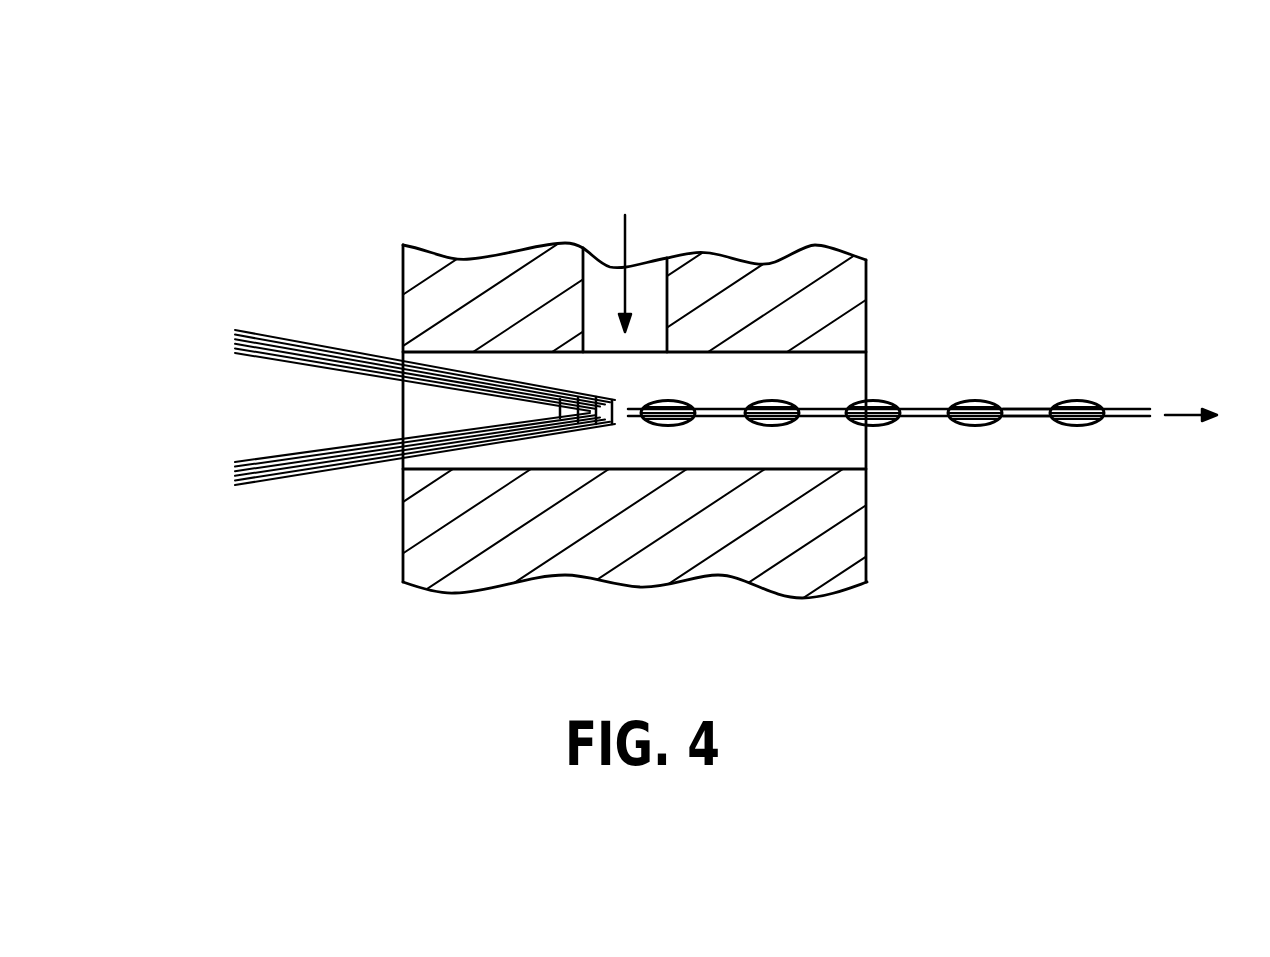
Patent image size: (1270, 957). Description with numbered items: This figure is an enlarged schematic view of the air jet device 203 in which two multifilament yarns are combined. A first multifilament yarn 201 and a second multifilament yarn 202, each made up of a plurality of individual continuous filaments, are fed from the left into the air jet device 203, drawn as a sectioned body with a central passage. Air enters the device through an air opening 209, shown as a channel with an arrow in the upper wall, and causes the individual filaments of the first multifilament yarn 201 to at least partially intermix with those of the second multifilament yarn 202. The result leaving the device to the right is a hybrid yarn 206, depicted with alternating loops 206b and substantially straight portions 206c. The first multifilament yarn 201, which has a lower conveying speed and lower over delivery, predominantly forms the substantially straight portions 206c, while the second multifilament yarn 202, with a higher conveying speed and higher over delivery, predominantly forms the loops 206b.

The first multifilament yarn 201 is at (278, 337).
The second multifilament yarn 202 is at (292, 481).
The air jet device 203 is at (776, 287).
The air opening 209 is at (610, 287).
The hybrid yarn 206 is at (888, 413).
The loops 206b is at (880, 412).
The substantially straight portions 206c is at (1020, 410).